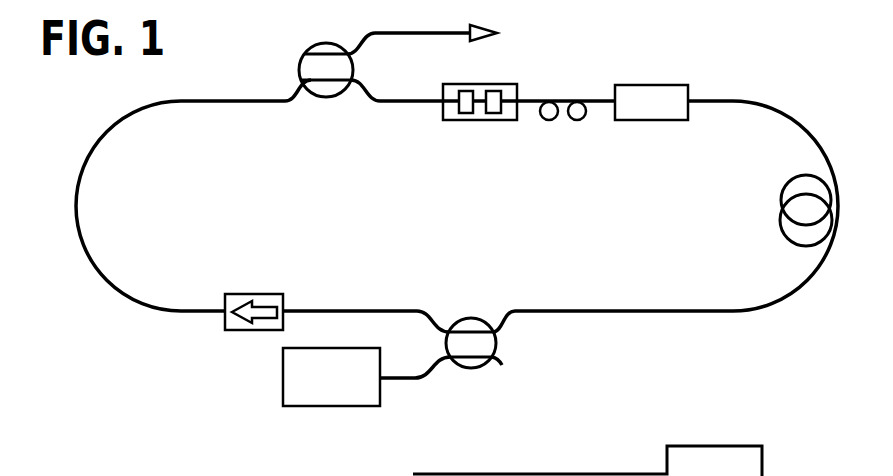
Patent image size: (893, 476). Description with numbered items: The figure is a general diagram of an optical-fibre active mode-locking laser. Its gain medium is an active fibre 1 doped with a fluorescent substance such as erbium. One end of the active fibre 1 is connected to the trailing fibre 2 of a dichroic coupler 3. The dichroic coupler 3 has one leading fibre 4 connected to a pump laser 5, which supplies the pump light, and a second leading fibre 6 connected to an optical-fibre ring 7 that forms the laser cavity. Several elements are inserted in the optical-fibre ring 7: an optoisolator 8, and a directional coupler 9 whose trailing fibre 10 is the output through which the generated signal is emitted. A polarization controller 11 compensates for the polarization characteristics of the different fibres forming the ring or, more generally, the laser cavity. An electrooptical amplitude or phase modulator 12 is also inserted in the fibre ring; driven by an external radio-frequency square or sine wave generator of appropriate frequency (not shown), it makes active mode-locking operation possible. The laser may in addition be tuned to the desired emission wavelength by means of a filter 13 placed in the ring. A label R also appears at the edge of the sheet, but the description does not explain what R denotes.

The active fibre 1 is at (780, 212).
The trailing fibre 2 is at (594, 310).
The dichroic coupler 3 is at (470, 318).
The leading fibre 4 is at (402, 378).
The pump laser 5 is at (283, 380).
The second leading fibre 6 is at (388, 310).
The optical-fibre ring 7 is at (97, 262).
The optoisolator 8 is at (265, 294).
The directional coupler 9 is at (323, 44).
The trailing fibre 10 is at (432, 32).
The polarization controller 11 is at (563, 121).
The electrooptical amplitude or phase modulator 12 is at (652, 122).
The filter 13 is at (475, 122).
The reference element R is at (768, 474).